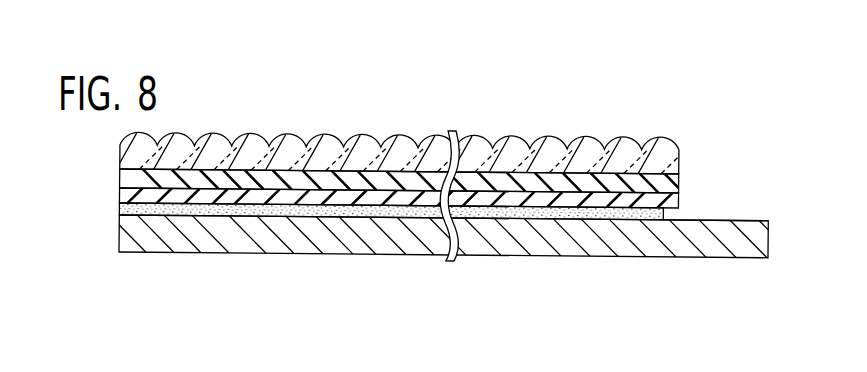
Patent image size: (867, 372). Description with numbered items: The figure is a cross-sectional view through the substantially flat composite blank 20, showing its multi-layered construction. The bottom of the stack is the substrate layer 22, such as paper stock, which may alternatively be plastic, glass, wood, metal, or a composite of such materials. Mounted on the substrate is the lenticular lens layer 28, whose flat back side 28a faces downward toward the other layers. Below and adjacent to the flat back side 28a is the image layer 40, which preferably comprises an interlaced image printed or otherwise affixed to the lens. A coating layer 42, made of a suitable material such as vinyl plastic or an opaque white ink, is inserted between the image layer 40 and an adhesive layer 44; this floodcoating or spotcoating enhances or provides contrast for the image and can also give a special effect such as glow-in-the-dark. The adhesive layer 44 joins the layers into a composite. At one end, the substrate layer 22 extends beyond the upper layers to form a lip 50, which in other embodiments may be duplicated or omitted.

The composite blank 20 is at (684, 112).
The substrate layer 22 is at (730, 242).
The lenticular lens layer 28 is at (677, 148).
The flat back side 28a is at (676, 174).
The image layer 40 is at (128, 179).
The coating layer 42 is at (672, 199).
The adhesive layer 44 is at (124, 210).
The lip 50 is at (740, 221).